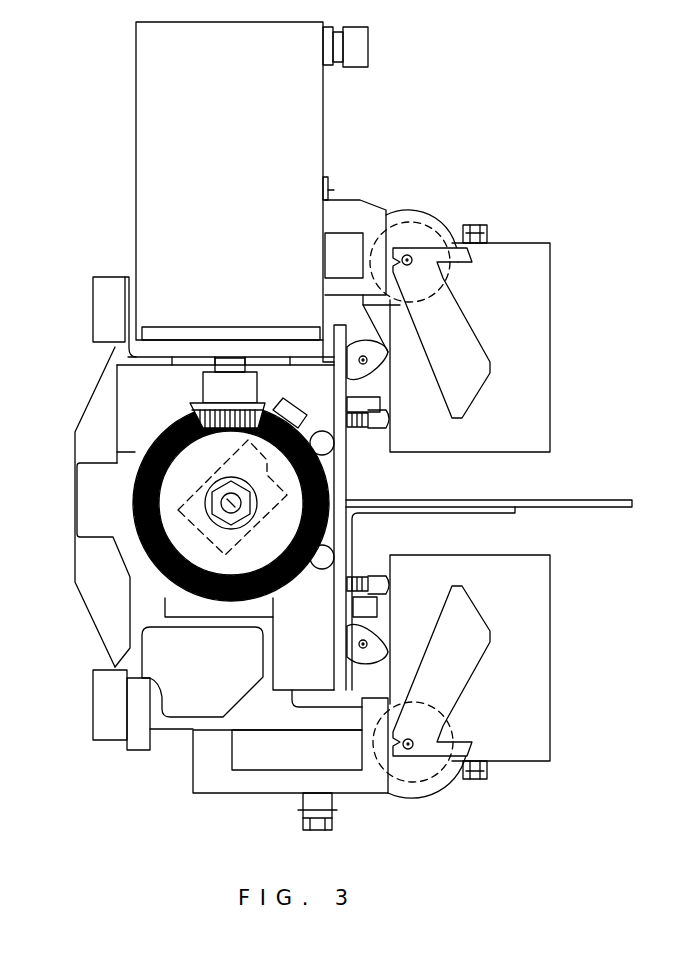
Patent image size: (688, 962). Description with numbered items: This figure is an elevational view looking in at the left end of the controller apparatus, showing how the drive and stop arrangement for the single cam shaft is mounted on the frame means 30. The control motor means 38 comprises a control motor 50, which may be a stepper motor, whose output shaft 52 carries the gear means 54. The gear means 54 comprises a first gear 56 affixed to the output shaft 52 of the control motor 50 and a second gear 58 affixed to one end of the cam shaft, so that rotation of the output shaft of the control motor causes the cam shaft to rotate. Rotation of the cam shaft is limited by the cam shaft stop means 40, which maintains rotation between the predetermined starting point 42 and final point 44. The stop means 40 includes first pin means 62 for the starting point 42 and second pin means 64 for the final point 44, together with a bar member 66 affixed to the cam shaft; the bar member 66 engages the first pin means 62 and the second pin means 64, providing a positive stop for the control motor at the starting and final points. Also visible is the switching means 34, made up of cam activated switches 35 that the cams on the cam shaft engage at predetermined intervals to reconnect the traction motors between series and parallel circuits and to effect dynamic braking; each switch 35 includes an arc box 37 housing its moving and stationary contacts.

The frame means 30 is at (99, 393).
The switching means 34 is at (550, 243).
The cam activated switch 35 is at (530, 333).
The arc box 37 is at (550, 432).
The control motor means 38 is at (239, 181).
The cam shaft stop means 40 is at (325, 447).
The starting point 42 is at (308, 432).
The final point 44 is at (303, 586).
The control motor 50 is at (322, 127).
The output shaft 52 is at (203, 384).
The gear means 54 is at (195, 419).
The first gear 56 is at (262, 404).
The second gear 58 is at (150, 572).
The first pin means 62 is at (325, 470).
The second pin means 64 is at (325, 555).
The bar member 66 is at (197, 487).